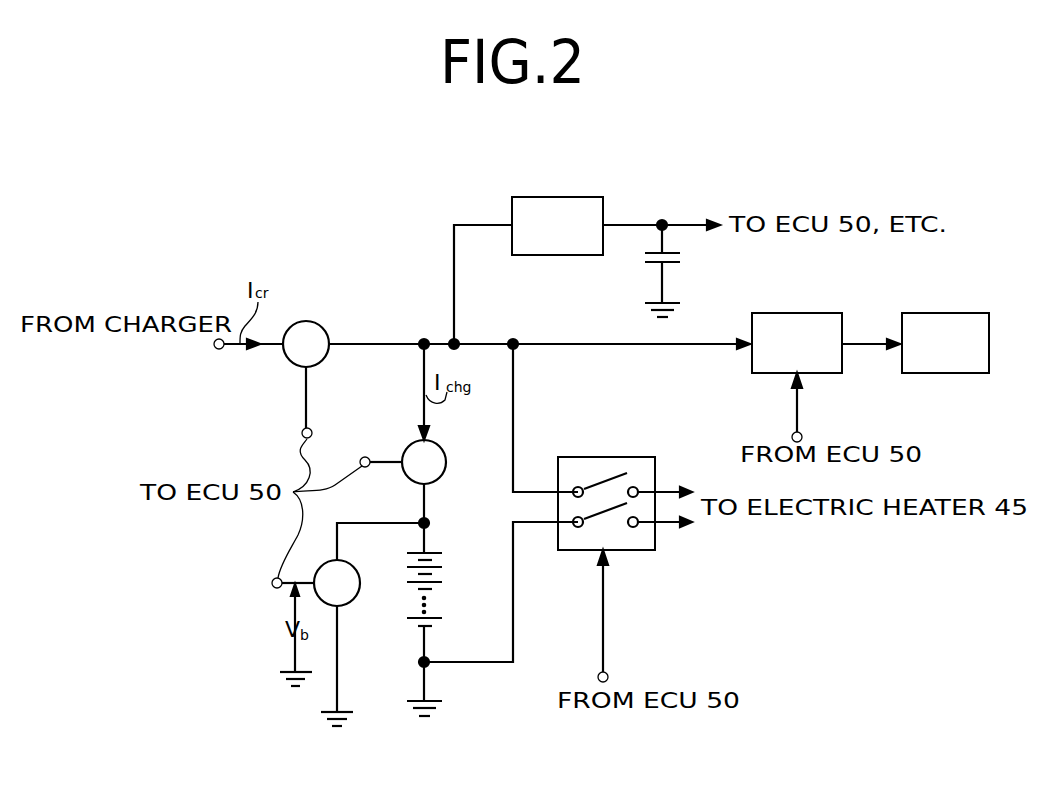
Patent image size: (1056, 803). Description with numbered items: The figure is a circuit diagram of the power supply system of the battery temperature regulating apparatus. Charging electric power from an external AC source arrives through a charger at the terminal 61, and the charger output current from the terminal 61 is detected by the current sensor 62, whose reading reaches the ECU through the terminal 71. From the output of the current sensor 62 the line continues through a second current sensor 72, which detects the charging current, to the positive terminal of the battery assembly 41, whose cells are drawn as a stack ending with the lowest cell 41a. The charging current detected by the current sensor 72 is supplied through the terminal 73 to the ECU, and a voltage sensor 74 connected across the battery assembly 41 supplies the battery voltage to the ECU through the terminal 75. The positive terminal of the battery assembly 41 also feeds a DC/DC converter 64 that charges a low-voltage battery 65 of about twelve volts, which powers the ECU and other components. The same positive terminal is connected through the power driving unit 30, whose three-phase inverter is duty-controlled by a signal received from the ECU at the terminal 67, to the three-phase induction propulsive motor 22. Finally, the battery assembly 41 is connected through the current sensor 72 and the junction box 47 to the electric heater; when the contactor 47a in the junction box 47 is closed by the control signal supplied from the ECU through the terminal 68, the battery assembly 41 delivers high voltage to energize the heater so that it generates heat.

The terminal 61 is at (219, 350).
The current sensor 62 is at (306, 321).
The DC/DC converter 64 is at (549, 197).
The low-voltage battery 65 is at (680, 265).
The power driving unit 30 is at (783, 313).
The propulsive motor 22 is at (917, 311).
The terminal 67 is at (803, 433).
The junction box 47 is at (617, 456).
The contactor 47a is at (617, 522).
The terminal 68 is at (610, 677).
The terminal 71 is at (302, 433).
The terminal 73 is at (365, 457).
The current sensor 72 is at (446, 459).
The voltage sensor 74 is at (352, 600).
The terminal 75 is at (272, 585).
The battery assembly 41 is at (449, 550).
The battery cell (lowest) 41a is at (415, 624).